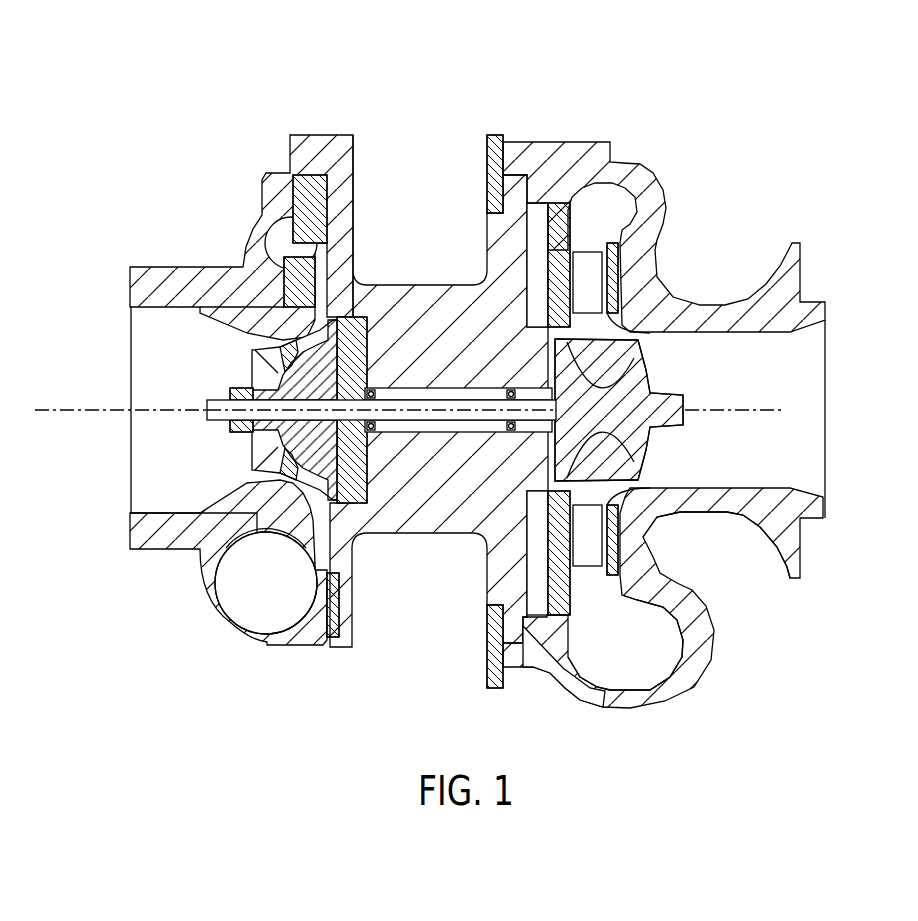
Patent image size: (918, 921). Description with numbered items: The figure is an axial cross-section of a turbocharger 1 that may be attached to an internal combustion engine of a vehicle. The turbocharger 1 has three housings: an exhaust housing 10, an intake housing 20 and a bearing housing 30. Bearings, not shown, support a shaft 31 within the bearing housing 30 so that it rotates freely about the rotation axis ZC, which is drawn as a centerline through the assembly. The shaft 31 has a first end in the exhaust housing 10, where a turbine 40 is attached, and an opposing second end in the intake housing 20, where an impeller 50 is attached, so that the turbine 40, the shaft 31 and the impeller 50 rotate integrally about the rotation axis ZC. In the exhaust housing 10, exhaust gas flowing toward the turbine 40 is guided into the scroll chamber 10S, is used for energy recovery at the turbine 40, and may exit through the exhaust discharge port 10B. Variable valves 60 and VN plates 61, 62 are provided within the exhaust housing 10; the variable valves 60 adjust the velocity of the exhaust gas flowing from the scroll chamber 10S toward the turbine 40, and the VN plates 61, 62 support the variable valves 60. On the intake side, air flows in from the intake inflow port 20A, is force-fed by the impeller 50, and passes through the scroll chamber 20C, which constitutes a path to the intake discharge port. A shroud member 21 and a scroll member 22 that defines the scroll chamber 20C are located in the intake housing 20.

The turbocharger 1 is at (200, 82).
The exhaust housing 10 is at (664, 181).
The exhaust discharge port 10B is at (751, 447).
The scroll chamber 10S is at (632, 645).
The intake housing 20 is at (245, 233).
The intake inflow port 20A is at (163, 372).
The scroll chamber 20C is at (268, 580).
The shroud member 21 is at (276, 543).
The scroll member 22 is at (298, 614).
The bearing housing 30 is at (422, 282).
The shaft 31 is at (389, 402).
The turbine 40 is at (652, 372).
The impeller 50 is at (248, 448).
The variable valve 60 is at (584, 247).
The VN plate 61 is at (612, 240).
The VN plate 62 is at (540, 271).
The rotation axis ZC is at (60, 405).